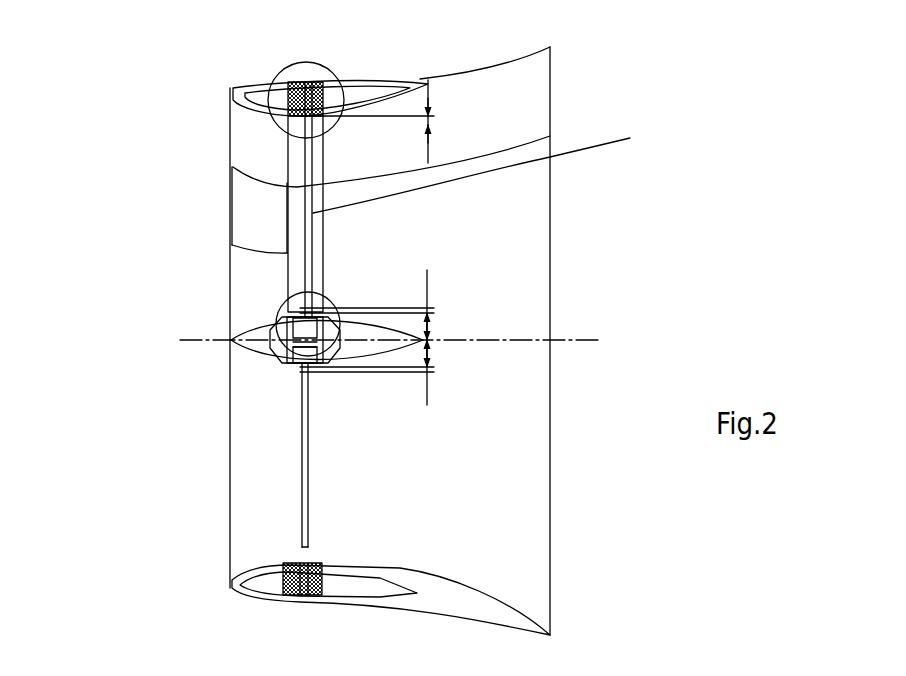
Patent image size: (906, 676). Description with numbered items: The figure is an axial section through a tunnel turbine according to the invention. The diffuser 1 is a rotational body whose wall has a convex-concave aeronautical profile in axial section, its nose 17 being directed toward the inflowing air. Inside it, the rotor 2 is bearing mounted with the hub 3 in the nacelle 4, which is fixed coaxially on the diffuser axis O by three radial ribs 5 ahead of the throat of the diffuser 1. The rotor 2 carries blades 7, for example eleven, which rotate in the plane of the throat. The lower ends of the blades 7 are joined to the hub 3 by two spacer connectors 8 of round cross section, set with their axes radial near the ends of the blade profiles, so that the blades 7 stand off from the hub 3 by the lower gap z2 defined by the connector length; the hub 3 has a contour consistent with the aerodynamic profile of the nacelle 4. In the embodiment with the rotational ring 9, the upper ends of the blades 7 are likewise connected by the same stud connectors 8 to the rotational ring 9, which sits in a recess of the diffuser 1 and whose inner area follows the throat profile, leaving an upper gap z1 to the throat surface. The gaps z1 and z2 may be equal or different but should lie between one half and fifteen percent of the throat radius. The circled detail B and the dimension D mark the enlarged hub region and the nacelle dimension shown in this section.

The diffuser 1 is at (273, 565).
The rotor 2 is at (298, 477).
The hub 3 is at (287, 363).
The nacelle 4 is at (282, 356).
The radial ribs 5 is at (253, 283).
The blades 7 is at (310, 418).
The spacer connectors 8 is at (434, 125).
The rotational ring 9 is at (297, 187).
The nose of the diffuser 17 is at (233, 89).
The detail B is at (283, 71).
The diameter D is at (287, 309).
The diffuser axis O- O is at (390, 325).
The upper gap z1 is at (367, 121).
The lower gap z2 is at (367, 337).